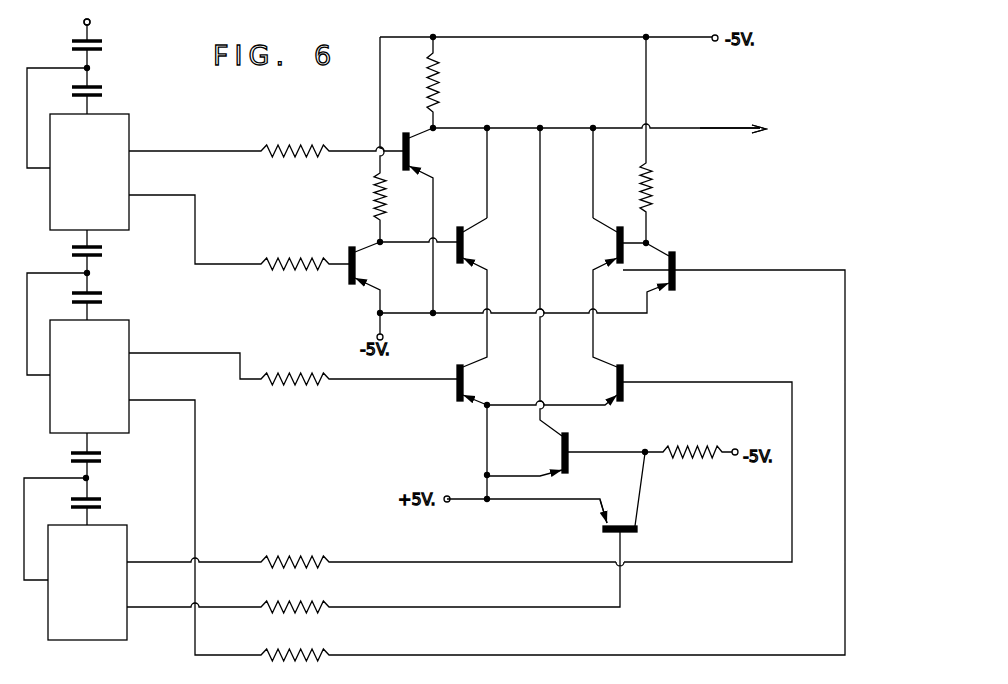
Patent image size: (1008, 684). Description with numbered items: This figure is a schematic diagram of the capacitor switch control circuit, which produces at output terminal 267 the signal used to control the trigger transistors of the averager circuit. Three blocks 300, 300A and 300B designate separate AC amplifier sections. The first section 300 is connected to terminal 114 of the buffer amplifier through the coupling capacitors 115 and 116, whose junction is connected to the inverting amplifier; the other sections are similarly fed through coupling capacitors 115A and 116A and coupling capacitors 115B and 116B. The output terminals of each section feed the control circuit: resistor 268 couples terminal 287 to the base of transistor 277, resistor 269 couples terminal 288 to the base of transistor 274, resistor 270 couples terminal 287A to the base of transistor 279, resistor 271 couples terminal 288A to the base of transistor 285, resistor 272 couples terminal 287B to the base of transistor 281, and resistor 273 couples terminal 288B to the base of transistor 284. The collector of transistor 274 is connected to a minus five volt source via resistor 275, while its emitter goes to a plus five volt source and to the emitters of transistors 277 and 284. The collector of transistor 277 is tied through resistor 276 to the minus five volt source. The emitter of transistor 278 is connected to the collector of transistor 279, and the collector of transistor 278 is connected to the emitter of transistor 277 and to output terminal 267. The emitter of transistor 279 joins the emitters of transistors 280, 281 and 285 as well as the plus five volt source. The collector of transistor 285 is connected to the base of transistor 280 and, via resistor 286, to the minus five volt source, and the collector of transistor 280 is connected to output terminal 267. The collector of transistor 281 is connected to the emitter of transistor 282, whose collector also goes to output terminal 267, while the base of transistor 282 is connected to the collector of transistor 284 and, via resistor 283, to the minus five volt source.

The terminal 114 is at (91, 22).
The coupling capacitor 115 is at (104, 46).
The coupling capacitor 116 is at (104, 92).
The coupling capacitor 115A is at (104, 251).
The coupling capacitor 116A is at (104, 298).
The coupling capacitor 115B is at (103, 457).
The coupling capacitor 116B is at (103, 503).
The AC amplifier section 300 is at (89, 172).
The AC amplifier section 300A is at (89, 376).
The AC amplifier section 300B is at (87, 582).
The output terminal 287 is at (131, 149).
The output terminal 288 is at (131, 197).
The output terminal 287A is at (131, 351).
The output terminal 288A is at (131, 402).
The output terminal 287B is at (129, 560).
The output terminal 288B is at (129, 609).
The resistor 268 is at (295, 147).
The resistor 269 is at (299, 262).
The resistor 270 is at (299, 372).
The resistor 271 is at (275, 606).
The resistor 272 is at (299, 555).
The resistor 273 is at (275, 653).
The transistor 274 is at (356, 266).
The resistor 275 is at (376, 191).
The resistor 276 is at (440, 88).
The transistor 277 is at (410, 152).
The transistor 278 is at (464, 242).
The transistor 279 is at (464, 382).
The transistor 280 is at (561, 452).
The transistor 281 is at (616, 383).
The transistor 282 is at (616, 243).
The resistor 283 is at (652, 190).
The transistor 284 is at (669, 270).
The transistor 285 is at (639, 533).
The resistor 286 is at (693, 449).
The output terminal 267 is at (765, 131).